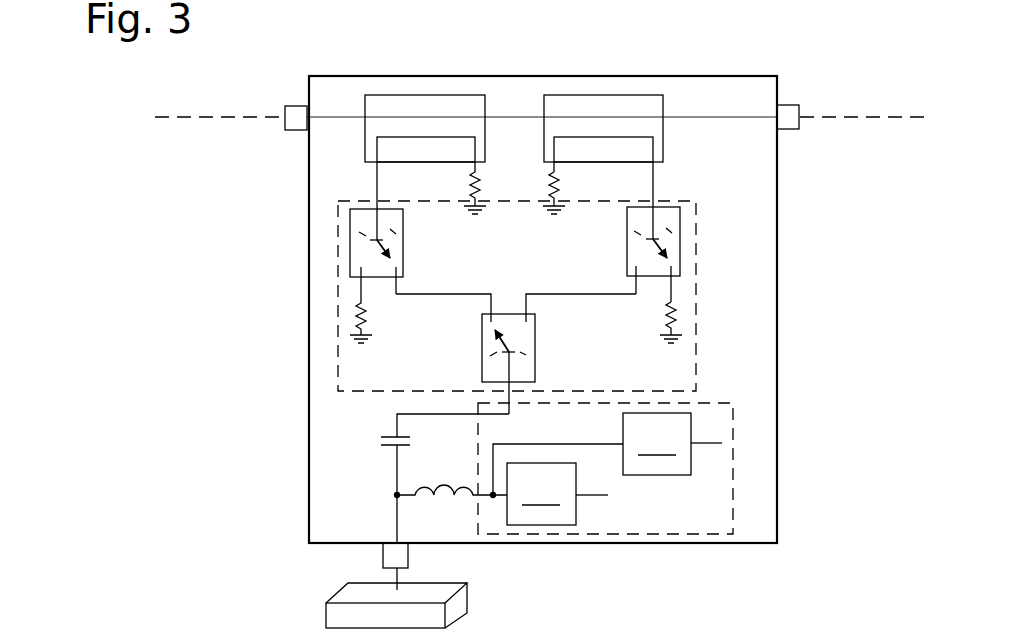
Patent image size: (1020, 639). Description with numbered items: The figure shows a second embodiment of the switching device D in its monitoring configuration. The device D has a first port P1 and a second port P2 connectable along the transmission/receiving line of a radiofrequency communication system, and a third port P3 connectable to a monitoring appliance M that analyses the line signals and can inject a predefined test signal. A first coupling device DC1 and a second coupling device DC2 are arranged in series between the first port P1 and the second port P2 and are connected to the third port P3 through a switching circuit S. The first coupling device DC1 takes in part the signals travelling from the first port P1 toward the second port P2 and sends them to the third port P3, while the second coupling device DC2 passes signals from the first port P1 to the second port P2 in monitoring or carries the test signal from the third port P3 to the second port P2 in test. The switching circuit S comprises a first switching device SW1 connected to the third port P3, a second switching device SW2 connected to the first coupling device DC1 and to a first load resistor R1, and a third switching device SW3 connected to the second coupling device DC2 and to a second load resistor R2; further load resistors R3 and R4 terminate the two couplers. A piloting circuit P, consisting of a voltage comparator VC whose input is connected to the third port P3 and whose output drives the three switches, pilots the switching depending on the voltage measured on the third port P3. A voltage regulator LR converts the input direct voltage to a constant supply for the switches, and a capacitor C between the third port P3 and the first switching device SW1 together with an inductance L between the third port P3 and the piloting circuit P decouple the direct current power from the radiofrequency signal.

The first port P1 is at (296, 115).
The second port P2 is at (788, 113).
The third port P3 is at (385, 560).
The first coupling device DC1 is at (415, 107).
The second coupling device DC2 is at (605, 107).
The first load resistor R1 is at (377, 317).
The second load resistor R2 is at (654, 320).
The load resistor R3 is at (459, 188).
The load resistor R4 is at (573, 188).
The first switching device SW1 is at (476, 356).
The second switching device SW2 is at (338, 240).
The third switching device SW3 is at (680, 243).
The switching circuit S is at (696, 325).
The capacitor C is at (432, 478).
The inductance L is at (452, 505).
The voltage regulator LR is at (557, 494).
The voltage comparator VC is at (607, 454).
The piloting circuit P is at (733, 500).
The switching device D is at (779, 455).
The monitoring appliance M is at (457, 608).